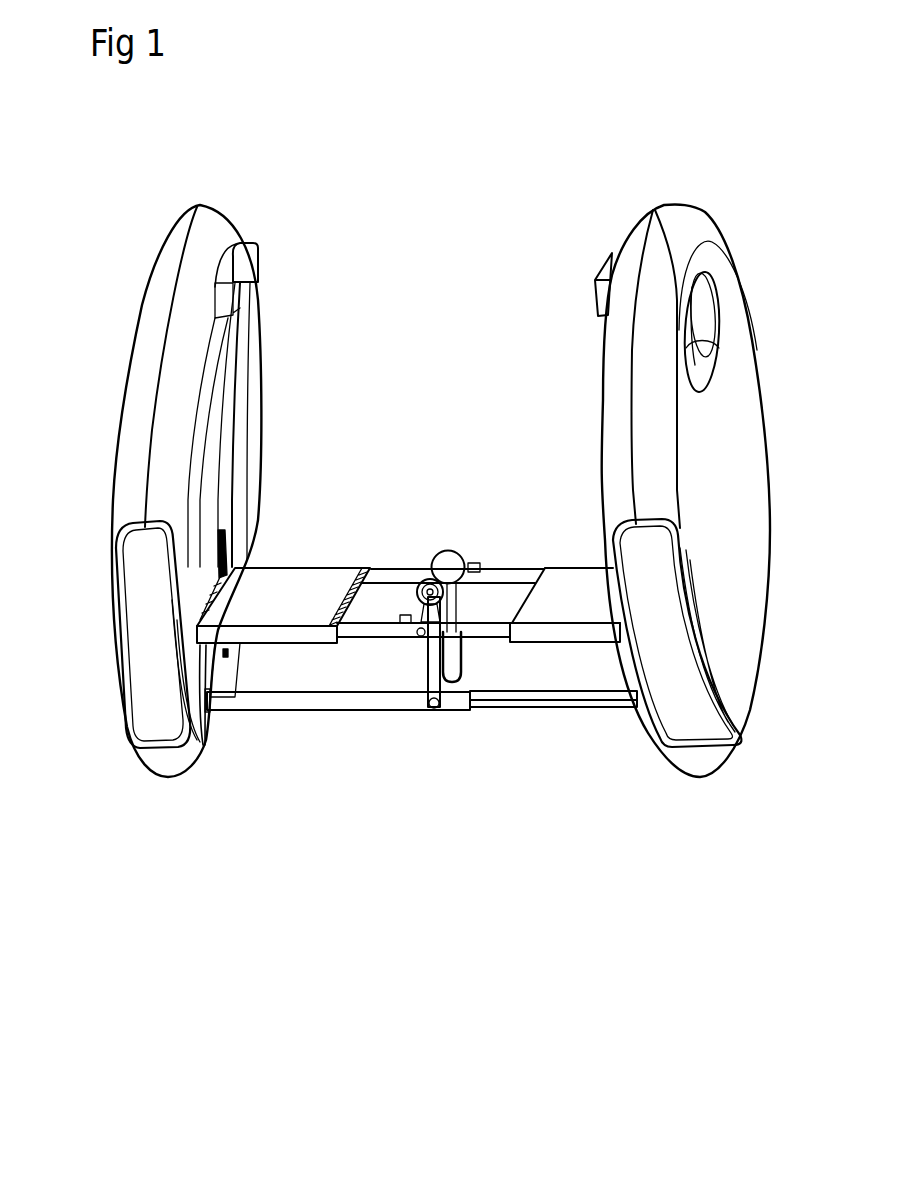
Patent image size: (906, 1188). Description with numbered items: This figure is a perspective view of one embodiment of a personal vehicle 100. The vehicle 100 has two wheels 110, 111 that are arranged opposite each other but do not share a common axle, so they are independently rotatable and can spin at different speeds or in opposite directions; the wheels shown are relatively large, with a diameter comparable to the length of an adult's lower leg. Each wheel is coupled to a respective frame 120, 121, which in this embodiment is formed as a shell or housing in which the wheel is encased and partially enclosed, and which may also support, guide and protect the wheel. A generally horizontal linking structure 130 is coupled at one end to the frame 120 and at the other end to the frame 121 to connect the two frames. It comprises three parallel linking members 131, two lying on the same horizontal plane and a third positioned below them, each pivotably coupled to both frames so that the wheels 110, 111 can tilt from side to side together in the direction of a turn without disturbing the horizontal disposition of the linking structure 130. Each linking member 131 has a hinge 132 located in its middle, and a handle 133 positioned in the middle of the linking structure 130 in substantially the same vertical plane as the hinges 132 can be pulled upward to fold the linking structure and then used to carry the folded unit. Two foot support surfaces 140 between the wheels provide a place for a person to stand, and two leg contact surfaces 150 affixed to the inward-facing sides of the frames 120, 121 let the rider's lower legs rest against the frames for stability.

The vehicle 100 is at (341, 924).
The wheel 110 is at (149, 527).
The wheel 111 is at (686, 524).
The frame 120 is at (128, 466).
The frame 121 is at (748, 512).
The linking structure 130 is at (417, 692).
The linking member 131 is at (510, 580).
The hinge 132 is at (432, 705).
The handle 133 is at (441, 558).
The foot support surface 140 is at (296, 610).
The leg contact surface 150 is at (252, 262).